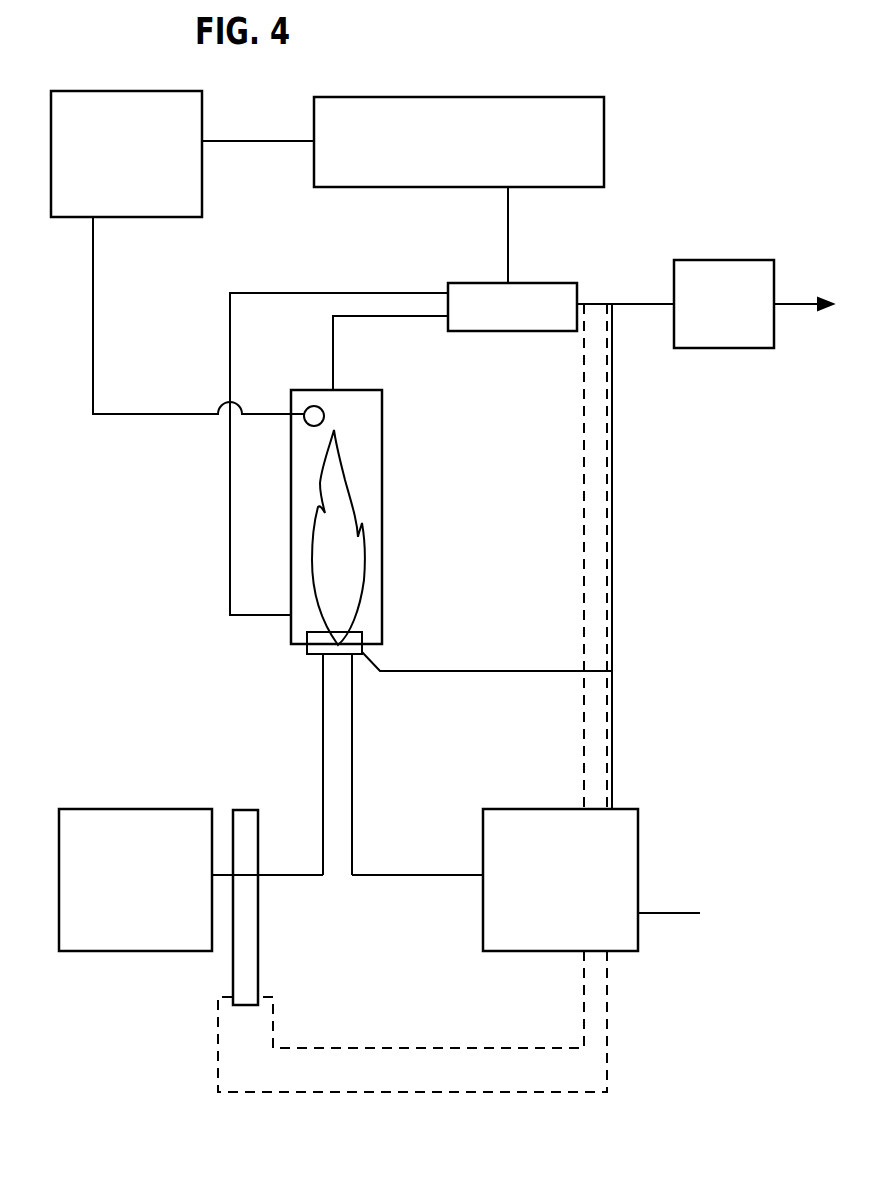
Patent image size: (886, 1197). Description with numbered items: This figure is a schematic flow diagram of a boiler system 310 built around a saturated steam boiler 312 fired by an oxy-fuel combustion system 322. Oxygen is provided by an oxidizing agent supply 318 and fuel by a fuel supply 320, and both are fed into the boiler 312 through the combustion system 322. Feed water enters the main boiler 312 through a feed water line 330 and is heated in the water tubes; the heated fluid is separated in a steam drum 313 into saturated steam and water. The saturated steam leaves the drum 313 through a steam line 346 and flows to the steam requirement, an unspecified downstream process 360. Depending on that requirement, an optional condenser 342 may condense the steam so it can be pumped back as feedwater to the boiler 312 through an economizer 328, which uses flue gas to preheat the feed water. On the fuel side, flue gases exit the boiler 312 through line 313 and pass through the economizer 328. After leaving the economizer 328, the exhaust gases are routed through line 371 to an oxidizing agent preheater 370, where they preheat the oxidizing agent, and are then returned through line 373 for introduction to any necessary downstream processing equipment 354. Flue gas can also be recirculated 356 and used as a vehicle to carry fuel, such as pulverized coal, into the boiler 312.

The boiler system 310 is at (648, 206).
The saturated steam boiler 312 is at (369, 444).
The steam drum 313 is at (333, 356).
The oxidizing agent supply 318 is at (43, 963).
The fuel supply 320 is at (461, 937).
The oxy-fuel combustion system 322 is at (367, 638).
The economizer 328 is at (572, 293).
The feed water line 330 is at (230, 560).
The condenser 342 is at (360, 108).
The steam line 346 is at (95, 365).
The downstream processing equipment 354 is at (711, 272).
The flue gas recirculation 356 is at (613, 427).
The downstream process 360 is at (91, 97).
The oxidizing agent preheater 370 is at (245, 811).
The line 371 is at (584, 568).
The line 373 is at (607, 636).